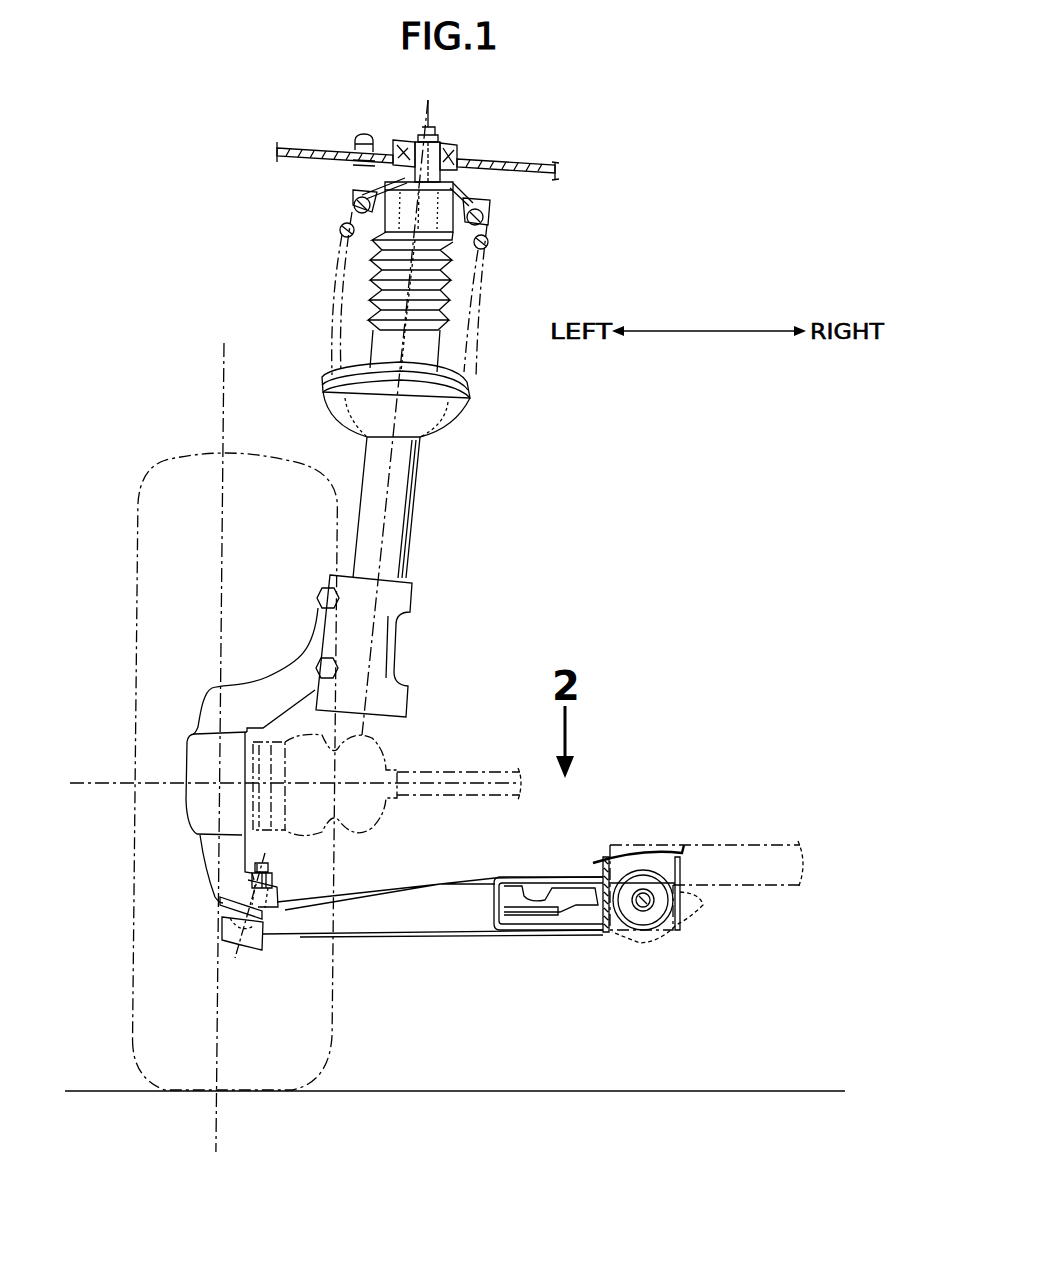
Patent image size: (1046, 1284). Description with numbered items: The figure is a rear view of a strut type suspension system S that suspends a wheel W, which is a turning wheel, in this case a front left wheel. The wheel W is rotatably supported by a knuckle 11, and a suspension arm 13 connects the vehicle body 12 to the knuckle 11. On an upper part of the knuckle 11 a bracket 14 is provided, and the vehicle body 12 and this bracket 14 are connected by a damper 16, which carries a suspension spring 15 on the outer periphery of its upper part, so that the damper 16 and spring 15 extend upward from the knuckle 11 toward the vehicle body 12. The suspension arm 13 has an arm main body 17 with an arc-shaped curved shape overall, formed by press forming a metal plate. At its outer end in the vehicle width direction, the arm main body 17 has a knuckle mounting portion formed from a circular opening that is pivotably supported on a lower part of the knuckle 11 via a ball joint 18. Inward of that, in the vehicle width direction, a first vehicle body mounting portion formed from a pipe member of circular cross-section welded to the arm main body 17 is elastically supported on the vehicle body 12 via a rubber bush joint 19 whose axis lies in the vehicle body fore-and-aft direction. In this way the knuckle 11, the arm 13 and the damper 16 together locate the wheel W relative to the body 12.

The knuckle 11 is at (193, 805).
The vehicle body 12 is at (527, 166).
The suspension arm 13 is at (498, 962).
The bracket 14 is at (384, 646).
The suspension spring 15 is at (488, 240).
The damper 16 is at (467, 438).
The arm main body 17 is at (432, 875).
The ball joint 18 is at (270, 951).
The rubber bush joint 19 is at (640, 880).
The strut type suspension system S is at (200, 520).
The wheel W is at (139, 612).